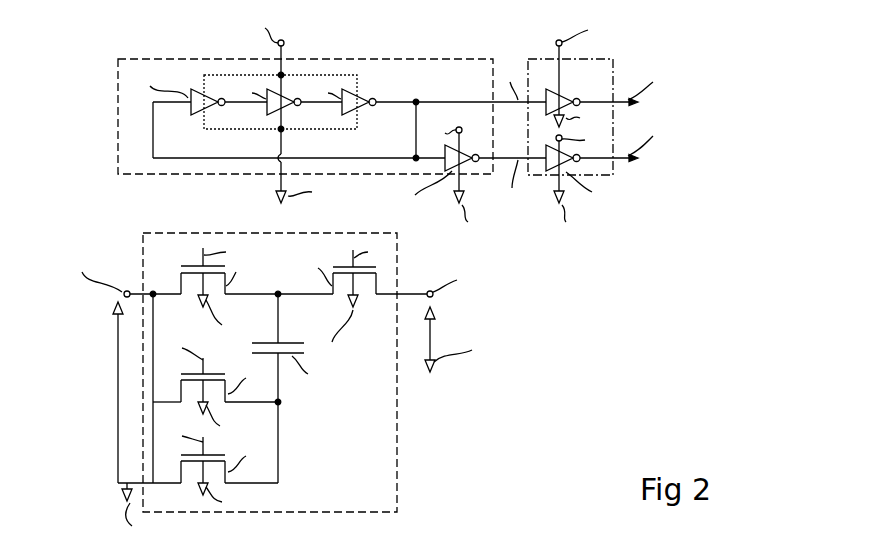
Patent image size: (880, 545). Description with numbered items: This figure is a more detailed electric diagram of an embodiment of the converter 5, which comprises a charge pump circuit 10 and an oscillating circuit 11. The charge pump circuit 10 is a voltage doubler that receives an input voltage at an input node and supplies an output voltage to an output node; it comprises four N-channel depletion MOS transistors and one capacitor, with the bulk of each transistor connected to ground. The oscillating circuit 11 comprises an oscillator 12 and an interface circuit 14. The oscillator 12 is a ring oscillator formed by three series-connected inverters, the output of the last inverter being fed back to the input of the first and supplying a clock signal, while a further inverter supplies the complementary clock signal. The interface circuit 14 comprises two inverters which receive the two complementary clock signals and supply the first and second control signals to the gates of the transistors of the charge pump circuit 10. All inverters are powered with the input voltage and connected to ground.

The converter 5 is at (706, 83).
The charge pump circuit 10 is at (399, 250).
The oscillating circuit 11 is at (106, 58).
The oscillator 12 is at (203, 58).
The interface circuit 14 is at (592, 58).